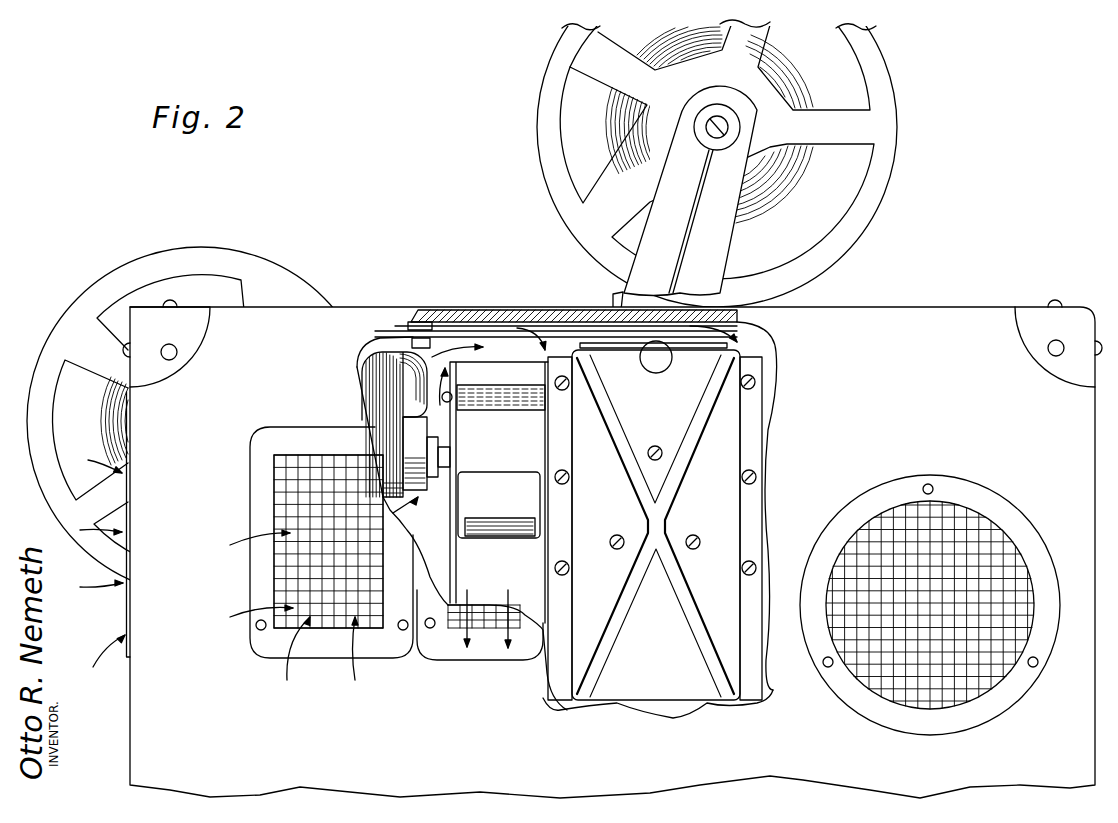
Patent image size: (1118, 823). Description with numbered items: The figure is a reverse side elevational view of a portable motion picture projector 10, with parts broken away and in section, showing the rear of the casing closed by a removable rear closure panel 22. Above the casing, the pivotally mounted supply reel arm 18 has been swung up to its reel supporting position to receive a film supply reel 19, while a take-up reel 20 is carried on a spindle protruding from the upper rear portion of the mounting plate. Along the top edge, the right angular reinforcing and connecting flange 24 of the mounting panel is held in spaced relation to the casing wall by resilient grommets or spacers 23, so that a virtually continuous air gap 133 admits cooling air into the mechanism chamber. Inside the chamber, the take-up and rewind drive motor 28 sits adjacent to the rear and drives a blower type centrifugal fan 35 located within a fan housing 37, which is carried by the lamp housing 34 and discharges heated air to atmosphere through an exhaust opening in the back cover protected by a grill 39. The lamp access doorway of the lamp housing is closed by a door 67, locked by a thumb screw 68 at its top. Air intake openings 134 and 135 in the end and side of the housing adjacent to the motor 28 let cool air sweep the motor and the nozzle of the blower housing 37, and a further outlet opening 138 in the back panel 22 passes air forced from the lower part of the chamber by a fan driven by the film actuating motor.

The portable type motion picture projector 10 is at (357, 272).
The supply reel arm 18 is at (634, 274).
The film supply reel 19 is at (547, 170).
The take-up reel 20 is at (137, 266).
The removable rear closure panel 22 is at (971, 318).
The resilient grommets or spacers 23 is at (443, 310).
The right angular reinforcing and connecting flange 24 is at (393, 333).
The take-up and rewind drive motor 28 is at (382, 398).
The lamp housing 34 is at (770, 360).
The blower type centrifugal fan 35 is at (490, 536).
The fan housing 37 is at (530, 447).
The grill 39 is at (492, 625).
The door 67 is at (720, 457).
The thumb screw 68 is at (656, 366).
The air gap 133 is at (500, 329).
The air intake opening 134 is at (120, 607).
The air intake opening 135 is at (328, 630).
The outlet opening 138 is at (998, 542).